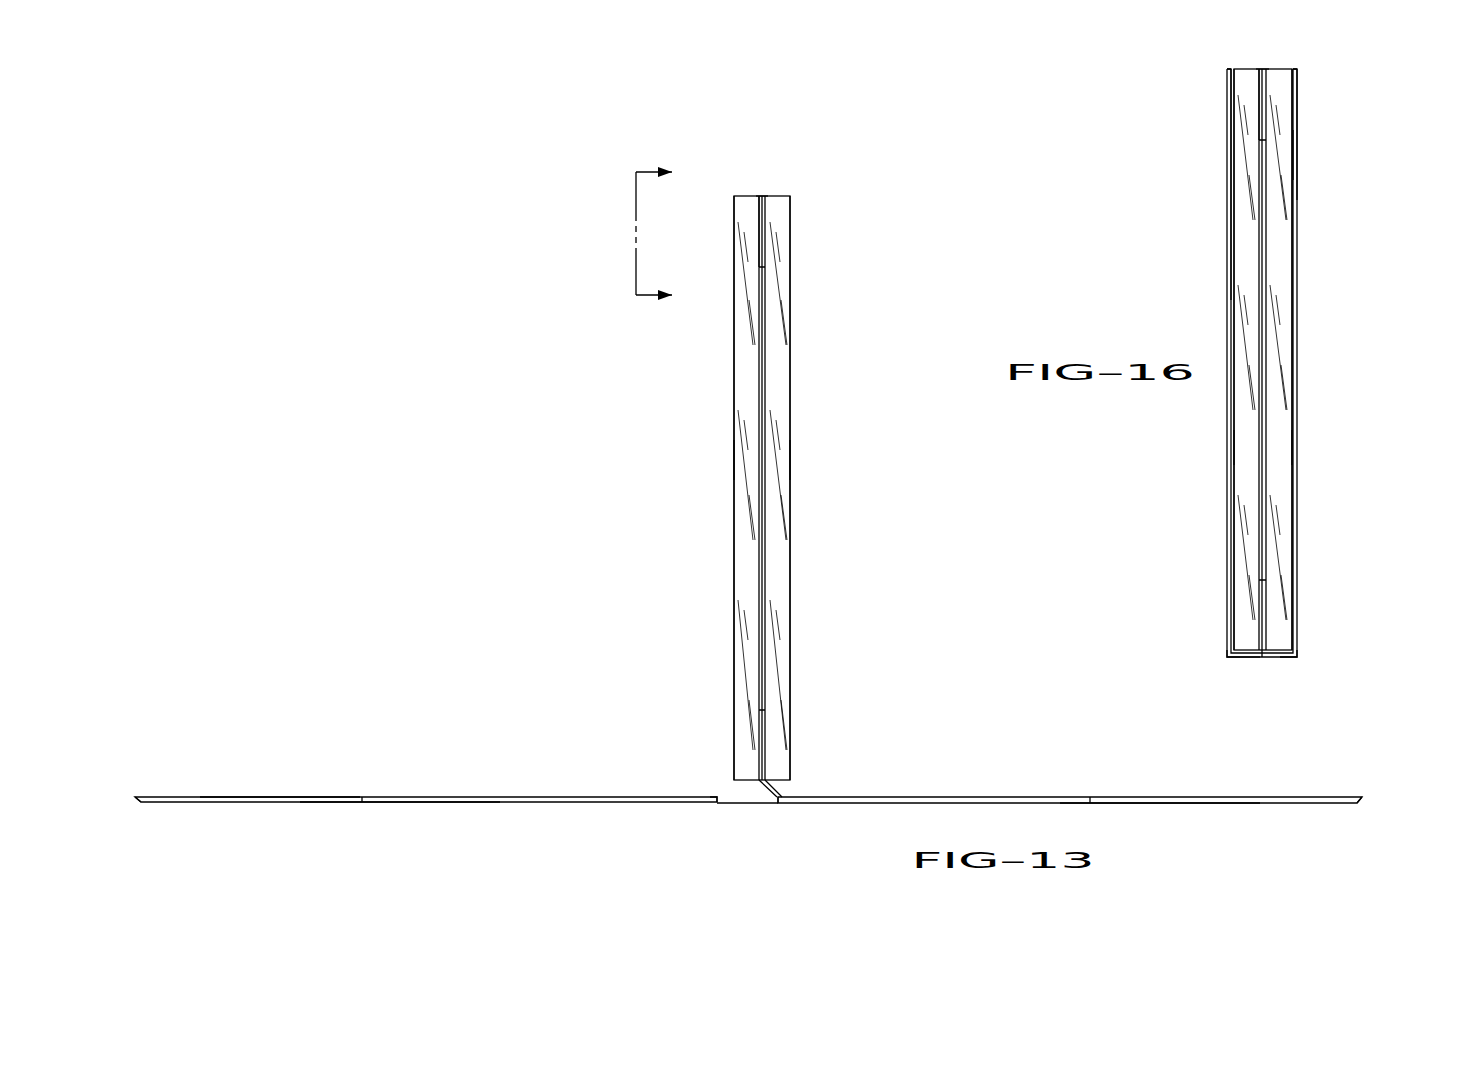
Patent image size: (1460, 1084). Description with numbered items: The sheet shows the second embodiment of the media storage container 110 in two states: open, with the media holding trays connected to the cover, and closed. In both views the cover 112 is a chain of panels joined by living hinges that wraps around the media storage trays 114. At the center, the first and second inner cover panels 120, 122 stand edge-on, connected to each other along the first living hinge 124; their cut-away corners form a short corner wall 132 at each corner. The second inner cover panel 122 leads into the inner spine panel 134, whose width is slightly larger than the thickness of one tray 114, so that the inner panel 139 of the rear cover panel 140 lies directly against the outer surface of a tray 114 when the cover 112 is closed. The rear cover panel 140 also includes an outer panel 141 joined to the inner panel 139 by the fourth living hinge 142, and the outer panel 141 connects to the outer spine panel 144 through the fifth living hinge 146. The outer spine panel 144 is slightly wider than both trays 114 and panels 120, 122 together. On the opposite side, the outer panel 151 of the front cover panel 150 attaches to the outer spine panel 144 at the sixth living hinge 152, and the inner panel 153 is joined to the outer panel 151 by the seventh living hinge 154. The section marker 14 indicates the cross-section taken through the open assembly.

In FIG. 13, the section line 14- 14 is at (675, 235).
In FIG. 13, the media storage container 110 is at (503, 412).
In FIG. 16, the media storage container 110 is at (1193, 128).
In FIG. 13, the cover 112 is at (220, 790).
In FIG. 16, the cover 112 is at (1226, 540).
In FIG. 13, the media storage trays 114 is at (734, 463).
In FIG. 16, the media storage trays 114 is at (1231, 447).
In FIG. 13, the first inner cover panel 120 is at (757, 378).
In FIG. 16, the first inner cover panel 120 is at (1258, 165).
In FIG. 13, the second inner cover panel 122 is at (765, 397).
In FIG. 16, the second inner cover panel 122 is at (1266, 197).
In FIG. 13, the first living hinge 124 is at (760, 195).
In FIG. 16, the first living hinge 124 is at (1258, 68).
In FIG. 13, the corner wall 132 is at (765, 238).
In FIG. 16, the corner wall 132 is at (1265, 108).
In FIG. 13, the inner spine panel 134 is at (773, 783).
In FIG. 16, the inner spine panel 134 is at (1275, 661).
In FIG. 13, the inner panel of rear cover panel 139 is at (1090, 797).
In FIG. 13, the rear cover panel 140 is at (1016, 797).
In FIG. 16, the rear cover panel 140 is at (1300, 158).
In FIG. 13, the outer panel of rear cover panel 141 is at (1162, 804).
In FIG. 13, the fourth living hinge 142 is at (1362, 801).
In FIG. 16, the fourth living hinge 142 is at (1296, 68).
In FIG. 13, the outer spine panel 144 is at (746, 803).
In FIG. 16, the outer spine panel 144 is at (1246, 661).
In FIG. 13, the fifth living hinge 146 is at (779, 803).
In FIG. 16, the fifth living hinge 146 is at (1296, 660).
In FIG. 13, the front cover panel 150 is at (287, 797).
In FIG. 16, the front cover panel 150 is at (1365, 278).
In FIG. 13, the outer panel of front cover panel 151 is at (397, 803).
In FIG. 13, the sixth living hinge 152 is at (716, 804).
In FIG. 16, the sixth living hinge 152 is at (1226, 658).
In FIG. 13, the inner panel of front cover panel 153 is at (362, 797).
In FIG. 13, the seventh living hinge 154 is at (133, 800).
In FIG. 16, the seventh living hinge 154 is at (1229, 68).